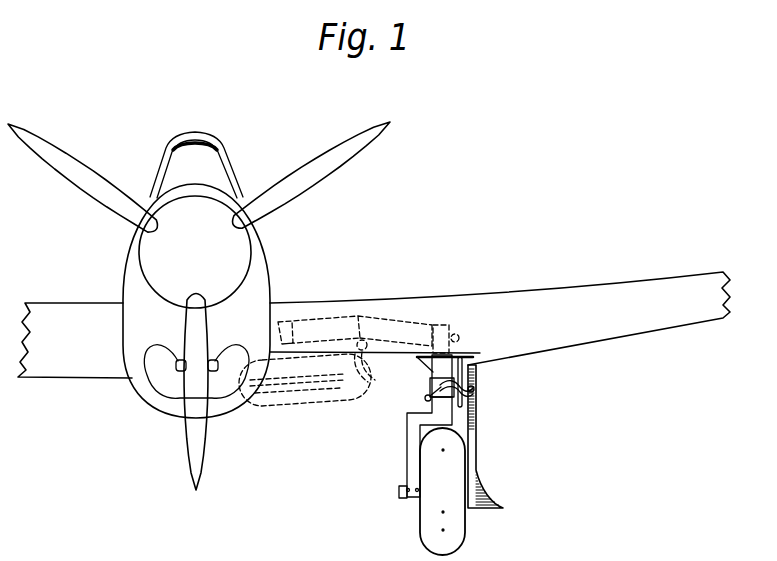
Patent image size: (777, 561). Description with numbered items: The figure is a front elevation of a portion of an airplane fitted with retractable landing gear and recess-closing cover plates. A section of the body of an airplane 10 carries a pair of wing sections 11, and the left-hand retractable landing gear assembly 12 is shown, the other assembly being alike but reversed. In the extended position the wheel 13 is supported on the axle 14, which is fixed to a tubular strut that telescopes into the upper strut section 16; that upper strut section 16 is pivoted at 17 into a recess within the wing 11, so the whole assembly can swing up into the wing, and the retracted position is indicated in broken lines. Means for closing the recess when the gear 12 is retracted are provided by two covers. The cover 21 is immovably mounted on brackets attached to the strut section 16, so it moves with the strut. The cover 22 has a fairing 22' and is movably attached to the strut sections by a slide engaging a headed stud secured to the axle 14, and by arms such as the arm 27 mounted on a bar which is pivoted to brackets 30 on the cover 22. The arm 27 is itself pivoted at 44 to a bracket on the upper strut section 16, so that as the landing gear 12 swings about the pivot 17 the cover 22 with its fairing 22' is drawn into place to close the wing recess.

The body of an airplane 10 is at (267, 243).
The wing section 11 is at (507, 292).
The retractable landing gear assembly 12 is at (405, 453).
The wheel 13 is at (465, 533).
The axle 14 is at (402, 490).
The upper strut section 16 is at (437, 380).
The pivot 17 is at (443, 332).
The cover 21 is at (470, 357).
The cover 22 is at (384, 431).
The fairing 22' is at (511, 488).
The arm 27 is at (420, 382).
The bracket 30 is at (470, 362).
The pivot 44 is at (428, 398).